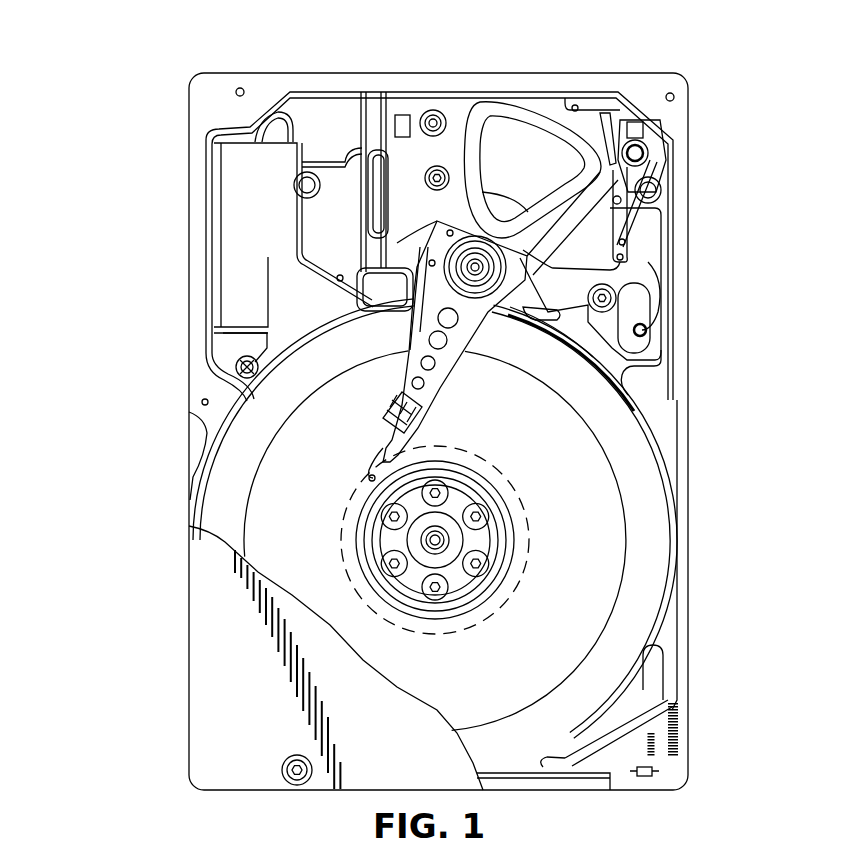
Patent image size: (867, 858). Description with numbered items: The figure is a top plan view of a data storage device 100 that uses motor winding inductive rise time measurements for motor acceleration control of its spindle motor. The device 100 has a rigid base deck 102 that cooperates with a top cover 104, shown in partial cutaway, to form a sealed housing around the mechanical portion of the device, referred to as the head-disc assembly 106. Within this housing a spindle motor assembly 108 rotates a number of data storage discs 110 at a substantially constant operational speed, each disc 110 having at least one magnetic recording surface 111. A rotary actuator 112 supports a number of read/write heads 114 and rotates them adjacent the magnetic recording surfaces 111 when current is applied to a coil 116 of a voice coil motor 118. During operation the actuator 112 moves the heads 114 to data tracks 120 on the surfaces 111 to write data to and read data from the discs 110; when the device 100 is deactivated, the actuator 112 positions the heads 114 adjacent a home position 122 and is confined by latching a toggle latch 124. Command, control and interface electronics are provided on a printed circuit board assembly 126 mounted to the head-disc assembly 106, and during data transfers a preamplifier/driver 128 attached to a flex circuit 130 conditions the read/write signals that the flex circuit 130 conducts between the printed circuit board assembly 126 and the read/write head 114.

The data storage device 100 is at (260, 50).
The base deck 102 is at (200, 202).
The top cover 104 is at (222, 630).
The head-disc assembly 106 is at (695, 469).
The spindle motor assembly 108 is at (456, 521).
The data storage disc 110 is at (620, 633).
The magnetic recording surface 111 is at (555, 558).
The rotary actuator 112 is at (446, 392).
The read/write head 114 is at (368, 470).
The coil 116 is at (522, 115).
The voice coil motor 118 is at (556, 94).
The data tracks 120 is at (255, 455).
The home position 122 is at (497, 614).
The toggle latch 124 is at (670, 129).
The printed circuit board assembly 126 is at (184, 437).
The preamplifier/driver 128 is at (298, 262).
The flex circuit 130 is at (362, 262).